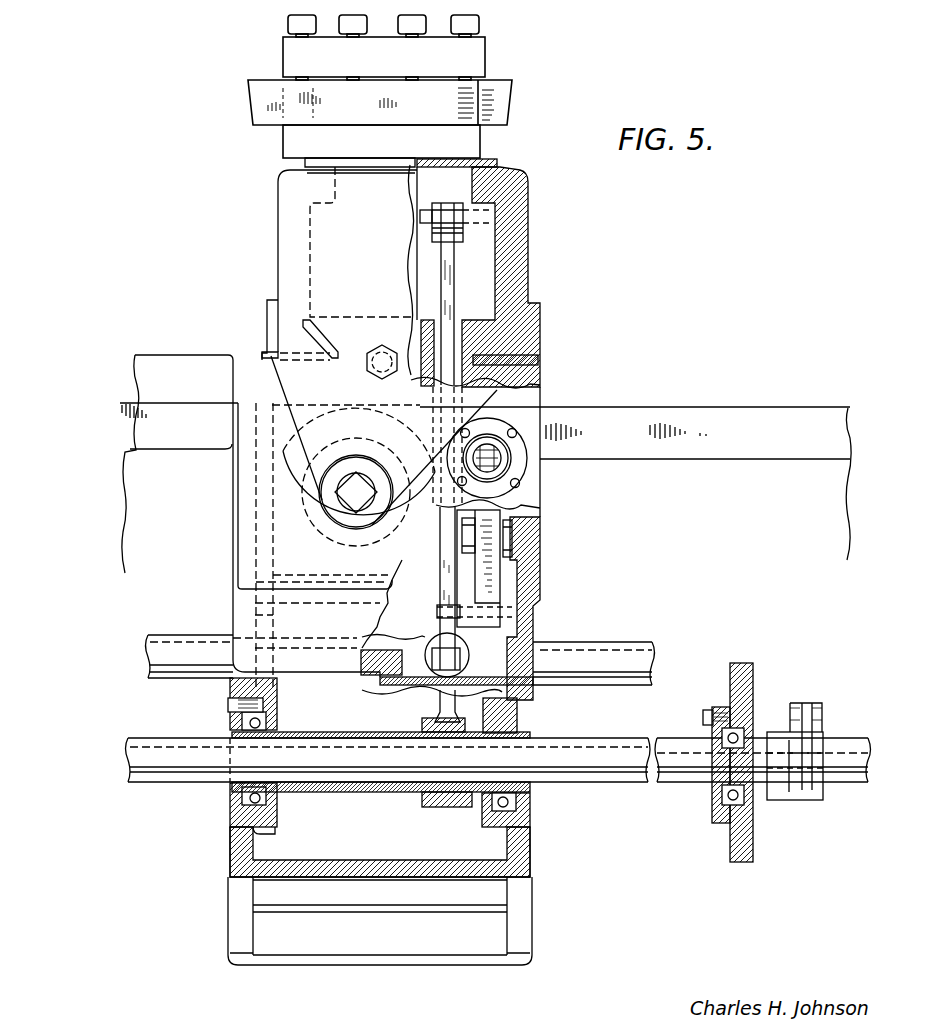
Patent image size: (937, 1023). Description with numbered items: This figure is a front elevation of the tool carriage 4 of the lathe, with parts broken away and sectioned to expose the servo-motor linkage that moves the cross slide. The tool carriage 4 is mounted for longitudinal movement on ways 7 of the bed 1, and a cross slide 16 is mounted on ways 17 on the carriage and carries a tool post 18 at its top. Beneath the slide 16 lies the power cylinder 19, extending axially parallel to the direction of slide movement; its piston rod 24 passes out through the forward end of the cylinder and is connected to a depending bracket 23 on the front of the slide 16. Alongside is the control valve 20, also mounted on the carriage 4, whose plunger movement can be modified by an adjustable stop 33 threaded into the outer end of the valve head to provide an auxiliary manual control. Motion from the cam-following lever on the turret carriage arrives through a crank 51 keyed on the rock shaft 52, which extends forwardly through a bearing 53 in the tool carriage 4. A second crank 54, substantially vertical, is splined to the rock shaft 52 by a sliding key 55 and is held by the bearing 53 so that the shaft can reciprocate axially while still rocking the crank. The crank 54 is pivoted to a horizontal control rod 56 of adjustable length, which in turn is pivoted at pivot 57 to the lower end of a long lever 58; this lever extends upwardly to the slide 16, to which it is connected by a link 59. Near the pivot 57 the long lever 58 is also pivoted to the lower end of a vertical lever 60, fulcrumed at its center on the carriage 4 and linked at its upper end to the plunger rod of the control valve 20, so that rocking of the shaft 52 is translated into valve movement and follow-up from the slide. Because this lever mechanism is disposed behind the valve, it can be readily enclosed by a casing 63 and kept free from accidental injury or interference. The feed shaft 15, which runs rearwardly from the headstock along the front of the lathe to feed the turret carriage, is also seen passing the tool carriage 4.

The bed 1 is at (853, 485).
The tool carriage 4 is at (543, 381).
The ways 7 is at (703, 398).
The feed shaft 15 is at (624, 642).
The cross slide 16 is at (530, 262).
The ways 17 is at (543, 346).
The tool post 18 is at (490, 51).
The power cylinder 19 is at (302, 503).
The control valve 20 is at (527, 484).
The depending bracket 23 is at (303, 448).
The piston rod 24 is at (350, 500).
The adjustable stop 33 is at (515, 467).
The crank 51 is at (805, 740).
The rock shaft 52 is at (643, 787).
The bearing 53 is at (230, 802).
The crank 54 is at (438, 703).
The sliding key 55 is at (332, 738).
The control rod 56 is at (437, 652).
The pivot 57 is at (470, 657).
The long lever 58 is at (445, 585).
The link 59 is at (432, 230).
The vertical lever 60 is at (498, 582).
The casing 63 is at (533, 605).